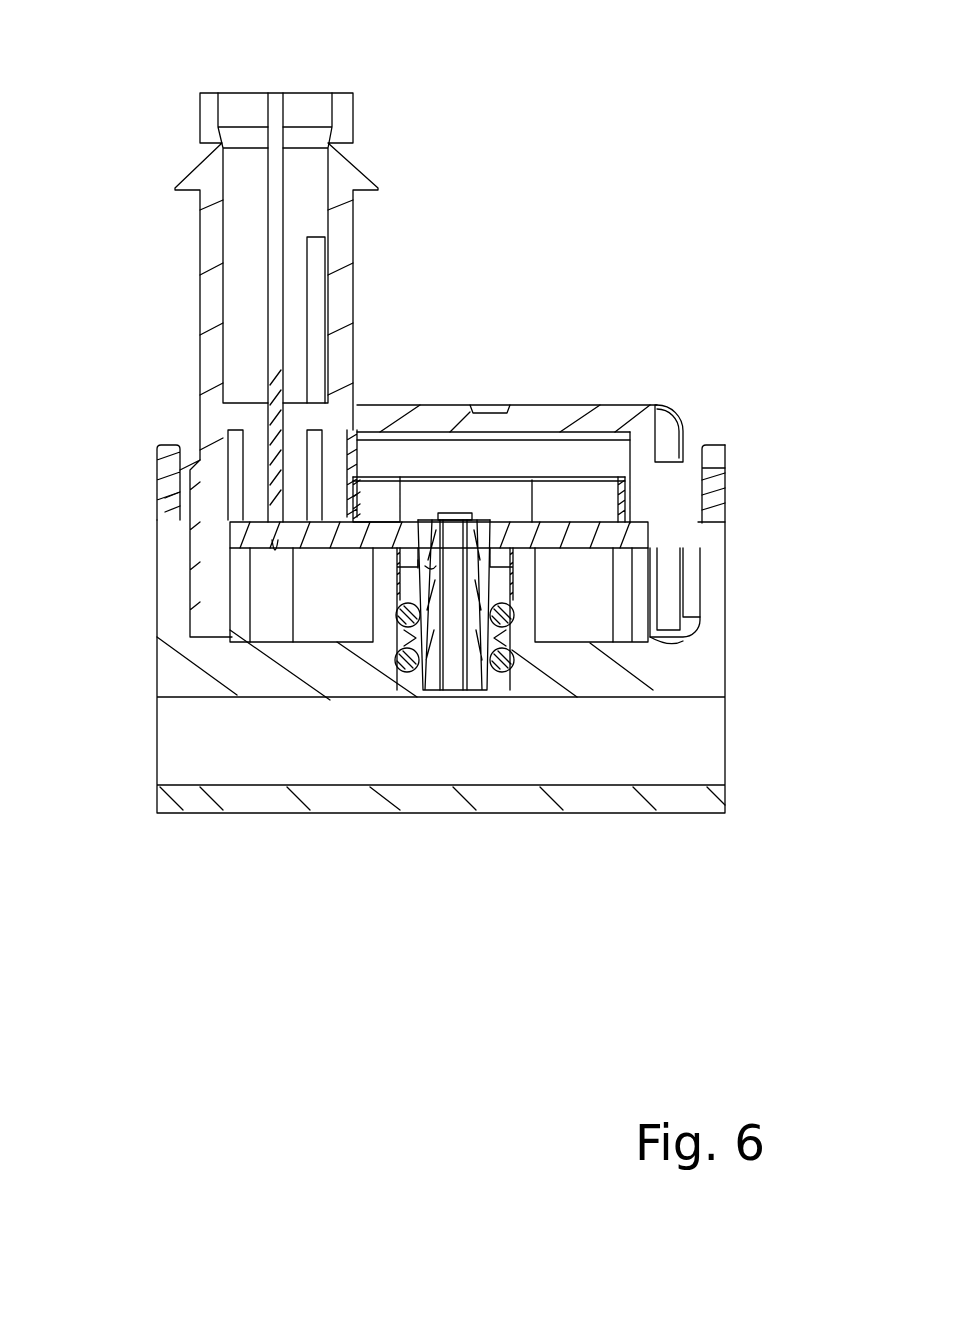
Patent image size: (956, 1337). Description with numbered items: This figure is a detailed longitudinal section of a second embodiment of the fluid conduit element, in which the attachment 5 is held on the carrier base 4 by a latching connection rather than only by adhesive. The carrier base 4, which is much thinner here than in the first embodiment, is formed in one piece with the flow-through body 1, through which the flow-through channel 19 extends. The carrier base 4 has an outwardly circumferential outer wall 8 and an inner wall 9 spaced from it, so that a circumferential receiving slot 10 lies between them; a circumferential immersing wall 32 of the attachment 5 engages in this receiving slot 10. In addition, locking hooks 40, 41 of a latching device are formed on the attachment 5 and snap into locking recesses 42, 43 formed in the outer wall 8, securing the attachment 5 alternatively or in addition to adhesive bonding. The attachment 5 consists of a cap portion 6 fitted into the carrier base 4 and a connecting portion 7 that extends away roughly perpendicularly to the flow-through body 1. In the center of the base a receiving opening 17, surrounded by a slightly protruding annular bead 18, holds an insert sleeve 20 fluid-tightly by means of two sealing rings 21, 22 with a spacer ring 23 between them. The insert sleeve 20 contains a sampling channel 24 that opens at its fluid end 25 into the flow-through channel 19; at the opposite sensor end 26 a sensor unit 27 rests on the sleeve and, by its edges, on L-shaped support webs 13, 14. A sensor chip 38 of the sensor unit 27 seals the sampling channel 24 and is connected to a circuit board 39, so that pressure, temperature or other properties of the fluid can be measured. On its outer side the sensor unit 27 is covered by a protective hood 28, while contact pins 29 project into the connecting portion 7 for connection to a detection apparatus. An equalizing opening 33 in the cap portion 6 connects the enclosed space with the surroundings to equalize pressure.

The flow-through body 1 is at (372, 800).
The carrier base 4 is at (297, 663).
The attachment 5 is at (582, 229).
The cap portion 6 is at (640, 428).
The connecting portion 7 is at (213, 237).
The outer wall 8 is at (715, 583).
The inner wall 9 is at (640, 625).
The receiving slot 10 is at (267, 605).
The L-shaped support web 13 is at (194, 632).
The L-shaped support web 14 is at (623, 597).
The receiving opening 17 is at (426, 717).
The annular bead 18 is at (525, 592).
The flow-through channel 19 is at (697, 742).
The insert sleeve 20 is at (432, 566).
The sealing ring 21 is at (392, 668).
The sealing ring 22 is at (393, 620).
The spacer ring 23 is at (392, 655).
The sampling channel 24 is at (456, 661).
The fluid end 25 is at (473, 705).
The sensor end 26 is at (432, 503).
The sensor unit 27 is at (396, 501).
The protective hood 28 is at (600, 440).
The contact pins 29 is at (277, 397).
The immersing wall 32 is at (668, 643).
The equalizing opening 33 is at (494, 418).
The sensor chip 38 is at (450, 510).
The circuit board 39 is at (580, 480).
The locking hook 40 is at (173, 482).
The locking hook 41 is at (705, 481).
The locking recess 42 is at (164, 510).
The locking recess 43 is at (718, 505).